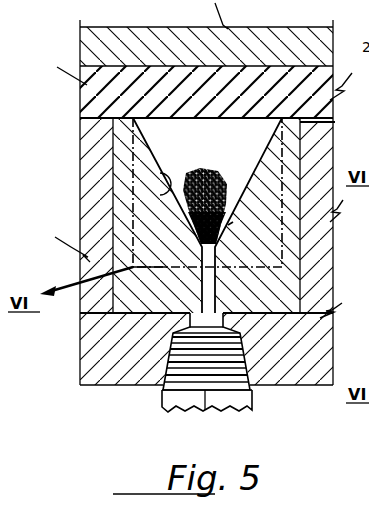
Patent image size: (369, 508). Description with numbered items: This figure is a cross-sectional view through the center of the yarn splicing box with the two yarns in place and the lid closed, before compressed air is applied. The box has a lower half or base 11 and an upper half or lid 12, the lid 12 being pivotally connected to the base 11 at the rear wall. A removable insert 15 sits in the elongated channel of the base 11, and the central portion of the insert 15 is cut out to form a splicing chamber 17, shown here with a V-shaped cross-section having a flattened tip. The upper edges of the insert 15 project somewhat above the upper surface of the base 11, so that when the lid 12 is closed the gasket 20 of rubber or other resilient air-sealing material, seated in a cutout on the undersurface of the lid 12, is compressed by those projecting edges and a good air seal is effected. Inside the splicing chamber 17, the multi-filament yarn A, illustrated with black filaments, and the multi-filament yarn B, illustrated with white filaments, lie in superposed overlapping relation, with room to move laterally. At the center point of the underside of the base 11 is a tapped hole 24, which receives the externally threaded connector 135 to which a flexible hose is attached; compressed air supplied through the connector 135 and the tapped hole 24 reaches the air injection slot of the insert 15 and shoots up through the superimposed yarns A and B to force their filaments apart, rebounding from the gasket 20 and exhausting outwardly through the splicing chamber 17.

The base 11 is at (318, 347).
The lid 12 is at (95, 36).
The removable insert 15 is at (298, 278).
The splicing chamber 17 is at (160, 195).
The gasket 20 is at (110, 88).
The tapped hole 24 is at (160, 368).
The externally threaded connector 135 is at (240, 400).
The multi-filament yarn A is at (228, 225).
The multi-filament yarn B is at (215, 173).